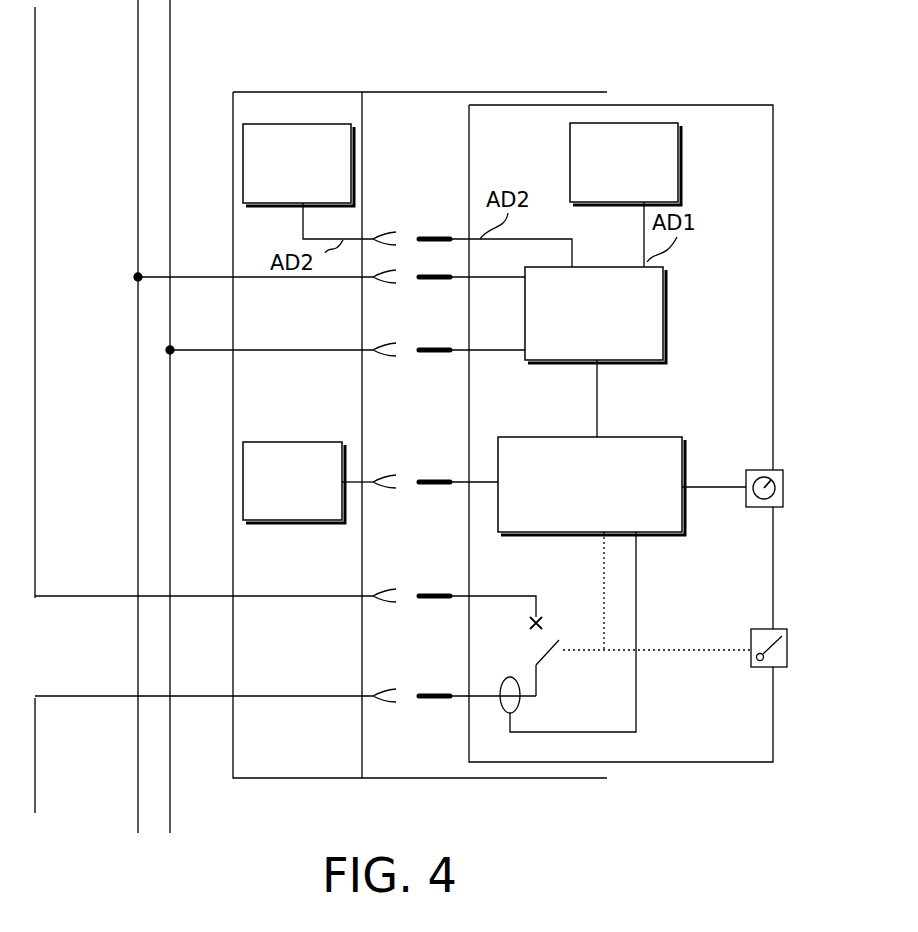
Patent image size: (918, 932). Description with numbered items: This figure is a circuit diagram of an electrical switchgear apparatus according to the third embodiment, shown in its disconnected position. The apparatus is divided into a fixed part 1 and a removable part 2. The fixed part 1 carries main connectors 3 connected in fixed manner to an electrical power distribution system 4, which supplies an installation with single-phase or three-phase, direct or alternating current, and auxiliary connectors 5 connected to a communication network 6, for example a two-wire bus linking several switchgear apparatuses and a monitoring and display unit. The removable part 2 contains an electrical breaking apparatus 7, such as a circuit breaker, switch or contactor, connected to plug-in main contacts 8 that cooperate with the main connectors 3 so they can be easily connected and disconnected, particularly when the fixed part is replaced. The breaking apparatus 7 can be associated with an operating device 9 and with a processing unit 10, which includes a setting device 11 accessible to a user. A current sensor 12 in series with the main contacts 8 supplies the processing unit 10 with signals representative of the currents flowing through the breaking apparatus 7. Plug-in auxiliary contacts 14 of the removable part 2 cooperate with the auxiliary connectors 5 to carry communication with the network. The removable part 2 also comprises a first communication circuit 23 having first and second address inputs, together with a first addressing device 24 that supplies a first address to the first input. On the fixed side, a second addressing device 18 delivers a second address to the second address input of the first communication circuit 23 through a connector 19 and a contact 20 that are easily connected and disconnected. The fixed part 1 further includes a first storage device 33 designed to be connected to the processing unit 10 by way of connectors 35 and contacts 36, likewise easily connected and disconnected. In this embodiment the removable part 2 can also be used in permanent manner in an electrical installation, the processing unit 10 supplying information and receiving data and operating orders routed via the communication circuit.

The fixed part 1 is at (412, 92).
The removable part 2 is at (773, 243).
The main connectors 3 is at (393, 690).
The electrical power distribution system 4 is at (35, 598).
The auxiliary connectors 5 is at (393, 344).
The communication network 6 is at (178, 60).
The electrical breaking apparatus 7 is at (548, 565).
The main contacts 8 is at (432, 692).
The operating device 9 is at (787, 625).
The processing unit 10 is at (682, 450).
The setting device 11 is at (783, 465).
The current sensor 12 is at (520, 700).
The auxiliary contacts 14 is at (432, 344).
The second addressing device 18 is at (280, 124).
The connector 19 is at (393, 232).
The contact 20 is at (430, 236).
The first communication circuit 23 is at (663, 335).
The first addressing device 24 is at (678, 180).
The first storage device 33 is at (327, 442).
The connectors 35 is at (393, 475).
The contacts 36 is at (431, 479).